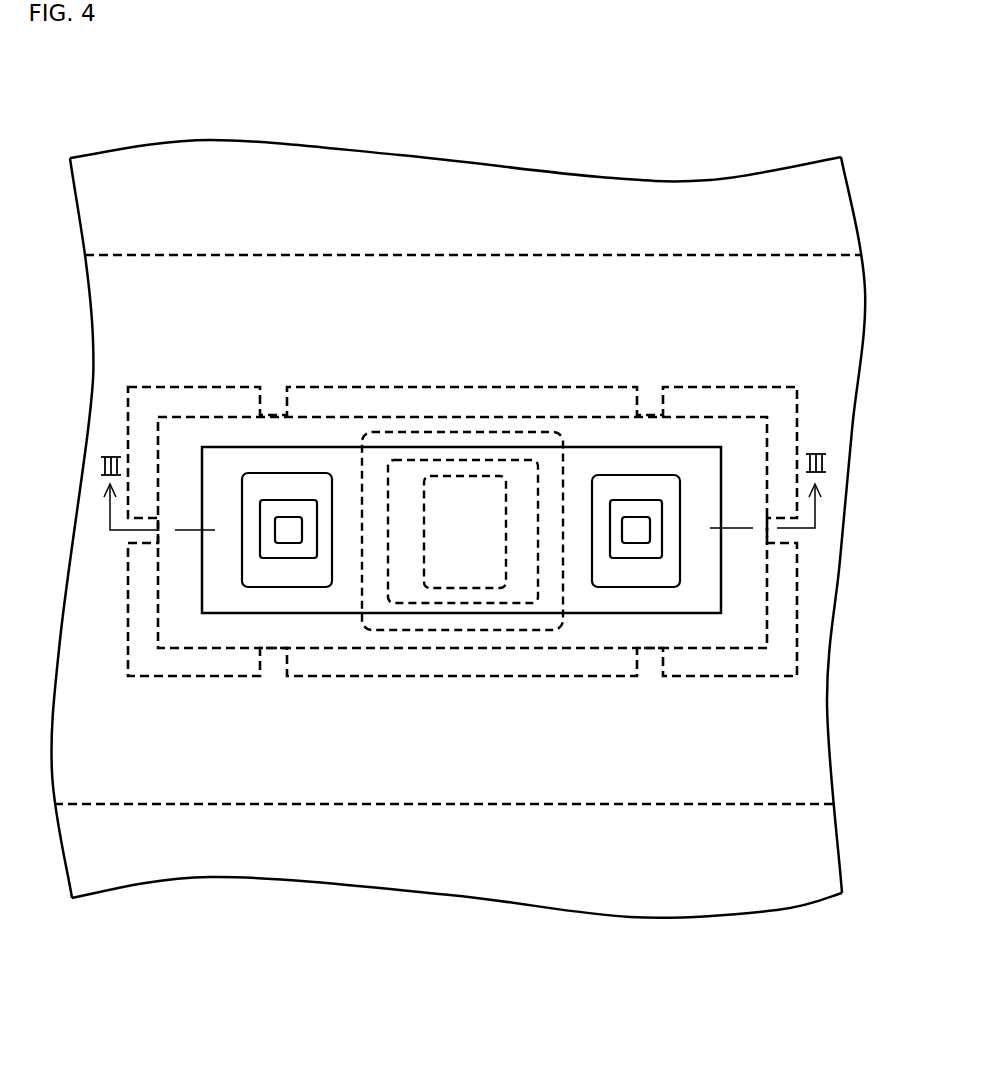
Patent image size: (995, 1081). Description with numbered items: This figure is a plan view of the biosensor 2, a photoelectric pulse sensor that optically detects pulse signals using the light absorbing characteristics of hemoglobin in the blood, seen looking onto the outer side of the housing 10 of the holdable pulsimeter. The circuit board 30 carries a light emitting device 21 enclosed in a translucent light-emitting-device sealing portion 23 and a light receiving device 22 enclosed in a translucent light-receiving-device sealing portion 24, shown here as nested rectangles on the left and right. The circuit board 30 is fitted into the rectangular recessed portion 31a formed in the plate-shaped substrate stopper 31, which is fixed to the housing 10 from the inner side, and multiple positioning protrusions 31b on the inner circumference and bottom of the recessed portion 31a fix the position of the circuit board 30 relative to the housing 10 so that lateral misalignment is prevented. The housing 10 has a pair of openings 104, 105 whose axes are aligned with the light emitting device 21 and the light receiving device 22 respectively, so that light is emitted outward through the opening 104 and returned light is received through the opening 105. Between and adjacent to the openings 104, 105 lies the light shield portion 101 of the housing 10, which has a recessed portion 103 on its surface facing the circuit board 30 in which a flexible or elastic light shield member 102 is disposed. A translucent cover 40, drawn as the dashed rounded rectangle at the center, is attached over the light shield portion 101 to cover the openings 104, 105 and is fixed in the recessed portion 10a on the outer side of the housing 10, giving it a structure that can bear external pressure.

The biosensor 2 is at (755, 363).
The housing 10 is at (767, 839).
The recessed portion 10a is at (203, 597).
The light emitting device 21 is at (287, 517).
The light receiving device 22 is at (640, 517).
The light-emitting-device sealing portion 23 is at (303, 500).
The light-receiving-device sealing portion 24 is at (623, 500).
The circuit board 30 is at (480, 432).
The substrate stopper 31 is at (582, 806).
The rectangular recessed portion 31a is at (347, 676).
The positioning protrusions 31b is at (258, 405).
The translucent cover 40 is at (408, 460).
The light shield portion 101 is at (579, 634).
The light shield member 102 is at (457, 588).
The recessed portion 103 is at (530, 622).
The opening 104 is at (318, 473).
The opening 105 is at (607, 475).